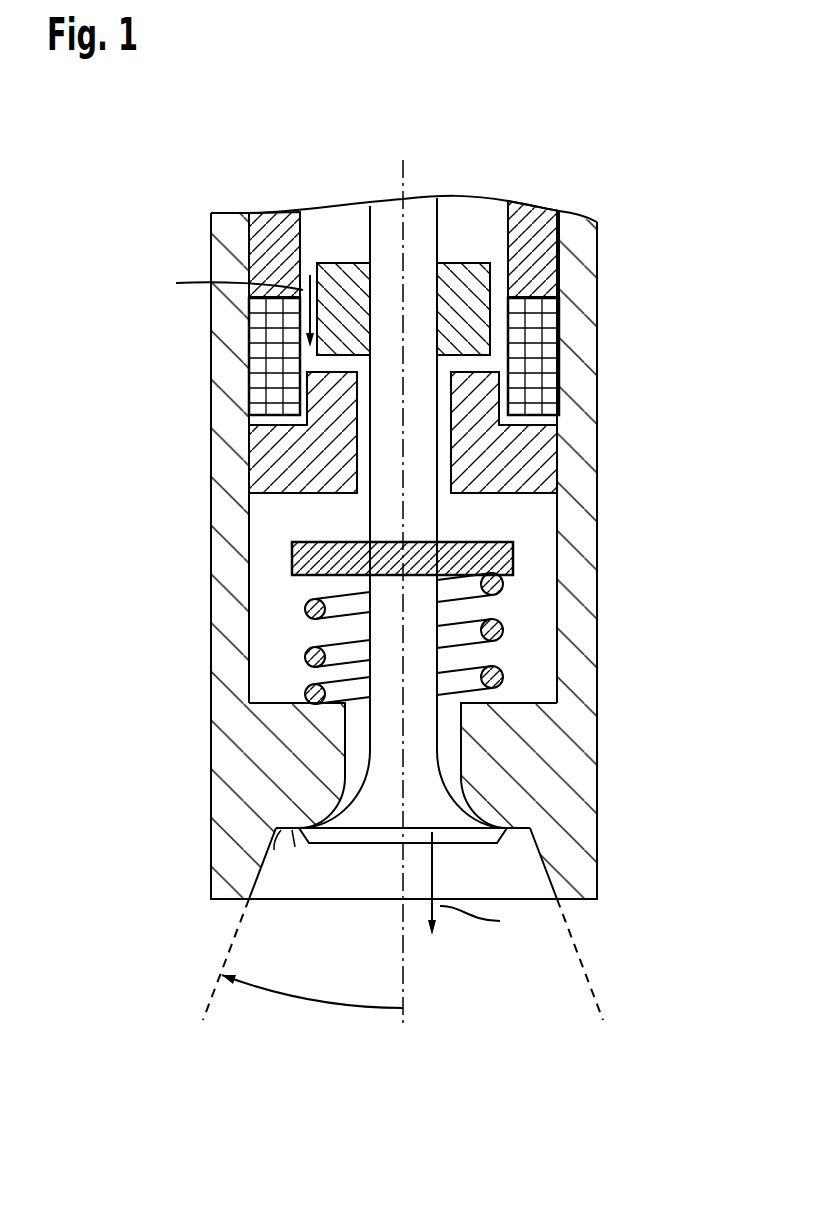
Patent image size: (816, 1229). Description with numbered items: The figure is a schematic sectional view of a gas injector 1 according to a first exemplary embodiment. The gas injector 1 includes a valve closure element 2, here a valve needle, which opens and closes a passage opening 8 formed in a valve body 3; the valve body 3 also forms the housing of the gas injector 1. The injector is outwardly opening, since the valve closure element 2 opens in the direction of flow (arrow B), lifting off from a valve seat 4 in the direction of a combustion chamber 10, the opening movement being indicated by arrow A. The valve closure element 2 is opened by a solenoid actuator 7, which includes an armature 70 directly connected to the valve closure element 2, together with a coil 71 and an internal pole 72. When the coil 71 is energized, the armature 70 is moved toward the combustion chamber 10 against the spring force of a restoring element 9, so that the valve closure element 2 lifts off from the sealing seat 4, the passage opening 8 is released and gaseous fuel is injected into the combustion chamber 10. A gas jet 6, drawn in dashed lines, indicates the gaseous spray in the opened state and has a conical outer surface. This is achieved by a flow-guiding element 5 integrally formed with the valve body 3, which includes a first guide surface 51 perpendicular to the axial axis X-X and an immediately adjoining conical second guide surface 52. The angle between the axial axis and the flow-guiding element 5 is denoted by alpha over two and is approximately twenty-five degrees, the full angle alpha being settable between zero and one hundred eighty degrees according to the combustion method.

The gas injector 1 is at (195, 160).
The valve closure element 2 is at (422, 616).
The valve body 3 is at (228, 752).
The valve seat 4 is at (495, 818).
The flow-guiding element 5 is at (278, 855).
The gas jet 6 is at (203, 1018).
The solenoid actuator 7 is at (203, 348).
The passage opening 8 is at (458, 760).
The restoring element 9 is at (306, 655).
The combustion chamber 10 is at (490, 993).
The first guide surface 51 is at (268, 850).
The second guide surface 52 is at (268, 883).
The armature 70 is at (515, 556).
The coil 71 is at (550, 341).
The internal pole 72 is at (478, 274).